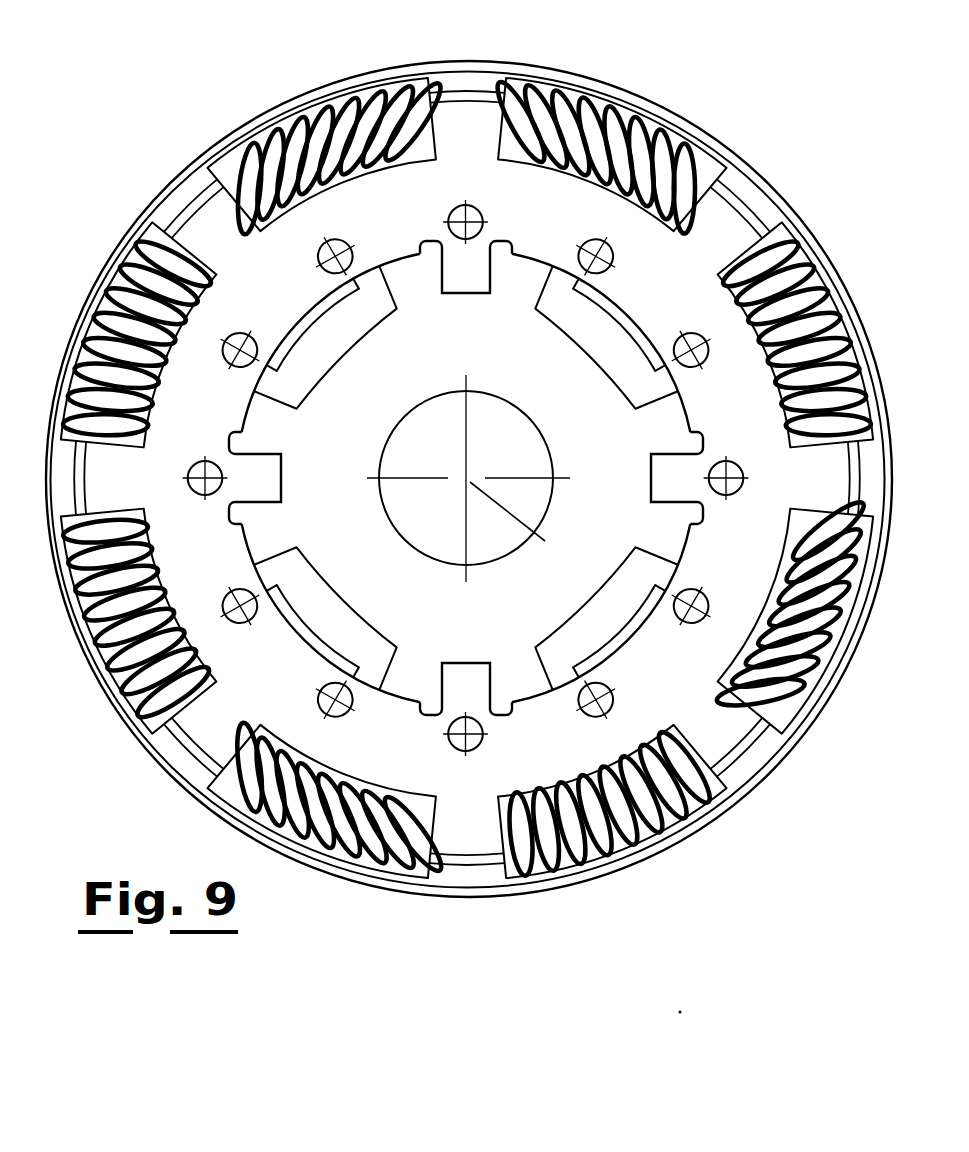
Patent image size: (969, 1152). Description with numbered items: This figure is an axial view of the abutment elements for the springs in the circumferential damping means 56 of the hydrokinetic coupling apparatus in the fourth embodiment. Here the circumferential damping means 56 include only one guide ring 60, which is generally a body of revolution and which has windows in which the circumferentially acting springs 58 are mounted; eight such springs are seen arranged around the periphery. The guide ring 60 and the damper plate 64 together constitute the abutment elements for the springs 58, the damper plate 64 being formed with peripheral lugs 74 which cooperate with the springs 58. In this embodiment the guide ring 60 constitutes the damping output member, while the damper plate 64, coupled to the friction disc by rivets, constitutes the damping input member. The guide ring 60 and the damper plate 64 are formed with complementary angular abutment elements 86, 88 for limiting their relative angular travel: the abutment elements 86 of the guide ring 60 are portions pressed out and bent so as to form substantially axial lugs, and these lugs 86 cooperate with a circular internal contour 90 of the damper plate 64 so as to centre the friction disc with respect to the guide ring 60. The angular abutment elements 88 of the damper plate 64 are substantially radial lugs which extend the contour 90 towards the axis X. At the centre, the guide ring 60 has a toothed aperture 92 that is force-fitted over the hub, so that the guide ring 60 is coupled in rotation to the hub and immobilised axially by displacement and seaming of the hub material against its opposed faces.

The circumferential damping means 56 is at (142, 158).
The circumferentially acting springs 58 is at (380, 102).
The guide ring 60 is at (466, 504).
The damper plate 64 is at (693, 708).
The peripheral lugs 74 is at (465, 847).
The angular abutment elements 86 is at (324, 325).
The angular abutment elements 88 is at (463, 293).
The circular internal contour 90 is at (397, 693).
The aperture 92 is at (552, 474).